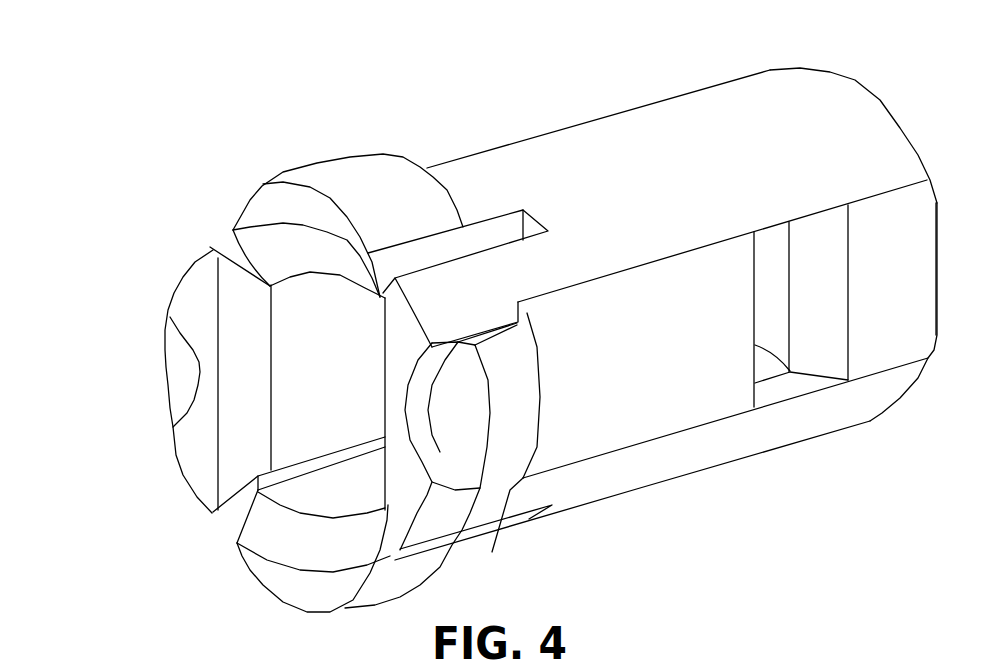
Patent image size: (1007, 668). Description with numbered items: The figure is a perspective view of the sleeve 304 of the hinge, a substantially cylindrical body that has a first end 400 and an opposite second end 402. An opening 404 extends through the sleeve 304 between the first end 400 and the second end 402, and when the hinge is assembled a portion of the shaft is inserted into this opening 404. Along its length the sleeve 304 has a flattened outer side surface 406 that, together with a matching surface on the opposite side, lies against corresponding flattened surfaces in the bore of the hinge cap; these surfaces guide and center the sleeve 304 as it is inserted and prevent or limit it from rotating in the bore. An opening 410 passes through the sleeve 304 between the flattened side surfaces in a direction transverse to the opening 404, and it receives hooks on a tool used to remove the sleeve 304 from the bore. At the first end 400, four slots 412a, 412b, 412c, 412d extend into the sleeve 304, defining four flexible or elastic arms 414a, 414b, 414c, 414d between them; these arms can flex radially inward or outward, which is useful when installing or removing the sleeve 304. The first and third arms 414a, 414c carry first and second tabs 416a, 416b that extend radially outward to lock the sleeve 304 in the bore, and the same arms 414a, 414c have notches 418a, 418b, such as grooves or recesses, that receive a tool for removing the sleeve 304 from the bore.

The sleeve 304 is at (340, 68).
The first end 400 is at (232, 247).
The second end 402 is at (843, 83).
The opening 404 is at (252, 334).
The flattened outer side surface 406 is at (638, 412).
The opening 410 is at (803, 352).
The slot 412a is at (210, 253).
The slot 412b is at (431, 240).
The slot 412c is at (403, 568).
The slot 412d is at (208, 525).
The first arm 414a is at (190, 380).
The second arm 414b is at (293, 208).
The third arm 414c is at (471, 460).
The fourth arm 414d is at (287, 573).
The first tab 416a is at (187, 362).
The second tab 416b is at (536, 442).
The notch 418a is at (180, 407).
The notch 418b is at (491, 509).